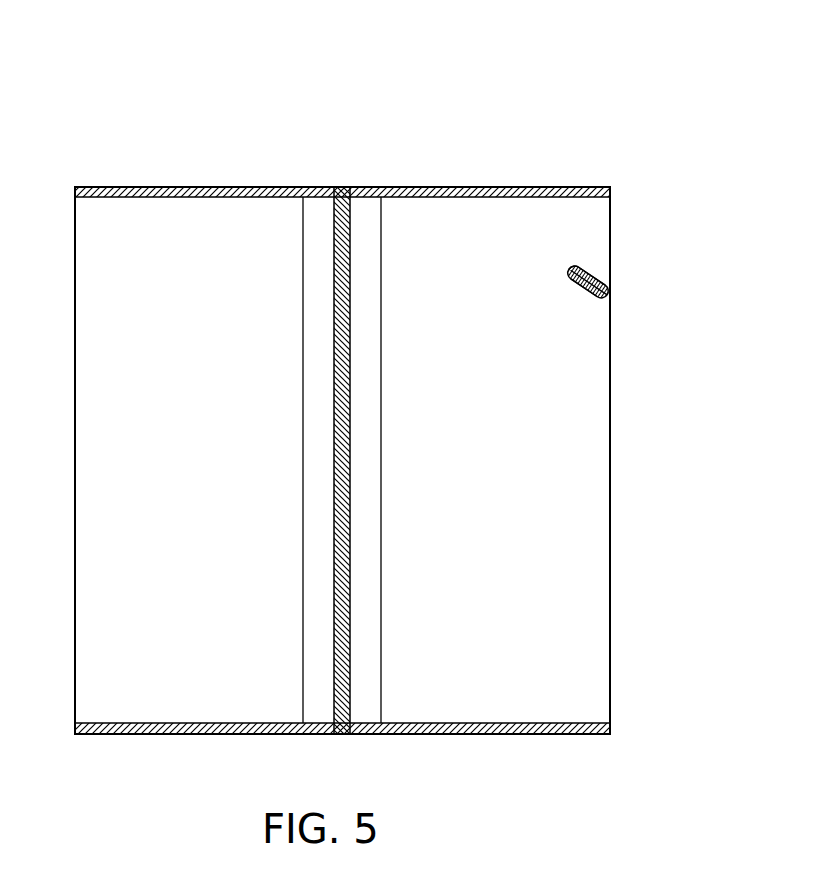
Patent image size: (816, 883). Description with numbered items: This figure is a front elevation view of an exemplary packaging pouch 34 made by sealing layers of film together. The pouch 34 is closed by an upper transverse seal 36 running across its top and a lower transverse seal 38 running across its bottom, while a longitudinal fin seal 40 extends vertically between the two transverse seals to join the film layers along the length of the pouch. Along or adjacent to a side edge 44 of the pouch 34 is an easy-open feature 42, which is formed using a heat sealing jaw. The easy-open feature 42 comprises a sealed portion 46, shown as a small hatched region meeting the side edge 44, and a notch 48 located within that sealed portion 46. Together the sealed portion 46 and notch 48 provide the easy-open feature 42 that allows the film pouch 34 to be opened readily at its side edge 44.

The packaging pouch 34 is at (104, 114).
The upper transverse seal 36 is at (473, 197).
The lower transverse seal 38 is at (562, 728).
The longitudinal fin seal 40 is at (336, 213).
The easy-open feature 42 is at (630, 276).
The side edge 44 is at (611, 400).
The sealed portion 46 is at (589, 267).
The notch 48 is at (613, 292).